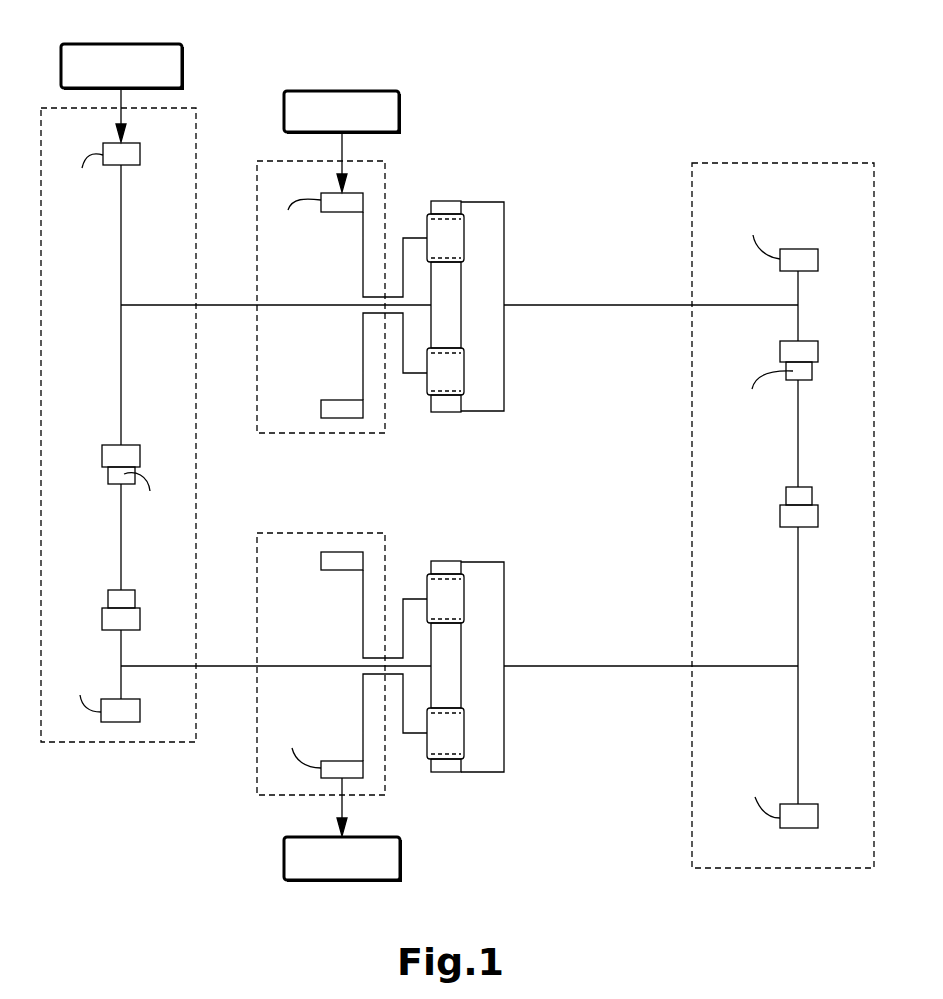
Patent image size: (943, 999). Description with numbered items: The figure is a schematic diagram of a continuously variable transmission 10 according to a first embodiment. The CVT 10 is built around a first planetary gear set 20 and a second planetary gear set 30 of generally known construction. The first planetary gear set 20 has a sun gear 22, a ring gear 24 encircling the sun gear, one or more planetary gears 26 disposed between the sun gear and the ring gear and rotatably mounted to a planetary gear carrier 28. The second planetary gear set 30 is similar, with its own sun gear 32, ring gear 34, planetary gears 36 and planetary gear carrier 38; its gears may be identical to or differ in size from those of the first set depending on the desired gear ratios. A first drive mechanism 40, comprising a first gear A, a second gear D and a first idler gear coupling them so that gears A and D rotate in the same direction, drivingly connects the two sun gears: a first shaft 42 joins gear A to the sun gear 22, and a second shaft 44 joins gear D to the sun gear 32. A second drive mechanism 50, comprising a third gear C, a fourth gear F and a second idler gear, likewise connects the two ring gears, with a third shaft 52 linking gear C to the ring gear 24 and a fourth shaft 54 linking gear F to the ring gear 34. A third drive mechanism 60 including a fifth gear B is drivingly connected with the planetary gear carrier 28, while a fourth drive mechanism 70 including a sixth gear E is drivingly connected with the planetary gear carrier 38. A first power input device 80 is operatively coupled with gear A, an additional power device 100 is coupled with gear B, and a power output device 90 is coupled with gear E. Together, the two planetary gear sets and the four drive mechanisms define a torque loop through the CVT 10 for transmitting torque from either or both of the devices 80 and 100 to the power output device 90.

The continuously variable transmission 10 is at (634, 84).
The first planetary gear set 20 is at (440, 190).
The sun gear 22 is at (461, 290).
The ring gear 24 is at (448, 201).
The planetary gears 26 is at (433, 380).
The planetary gear carrier 28 is at (413, 238).
The second planetary gear set 30 is at (466, 778).
The sun gear 32 is at (462, 650).
The ring gear 34 is at (447, 768).
The planetary gears 36 is at (432, 590).
The planetary gear carrier 38 is at (413, 735).
The first drive mechanism 40 is at (196, 118).
The first shaft 42 is at (140, 305).
The second shaft 44 is at (145, 666).
The second drive mechanism 50 is at (798, 163).
The third shaft 52 is at (556, 305).
The fourth shaft 54 is at (585, 666).
The third drive mechanism 60 is at (290, 435).
The fourth drive mechanism 70 is at (264, 795).
The first power input device 80 is at (141, 44).
The power output device 90 is at (341, 880).
The additional power device 100 is at (350, 91).